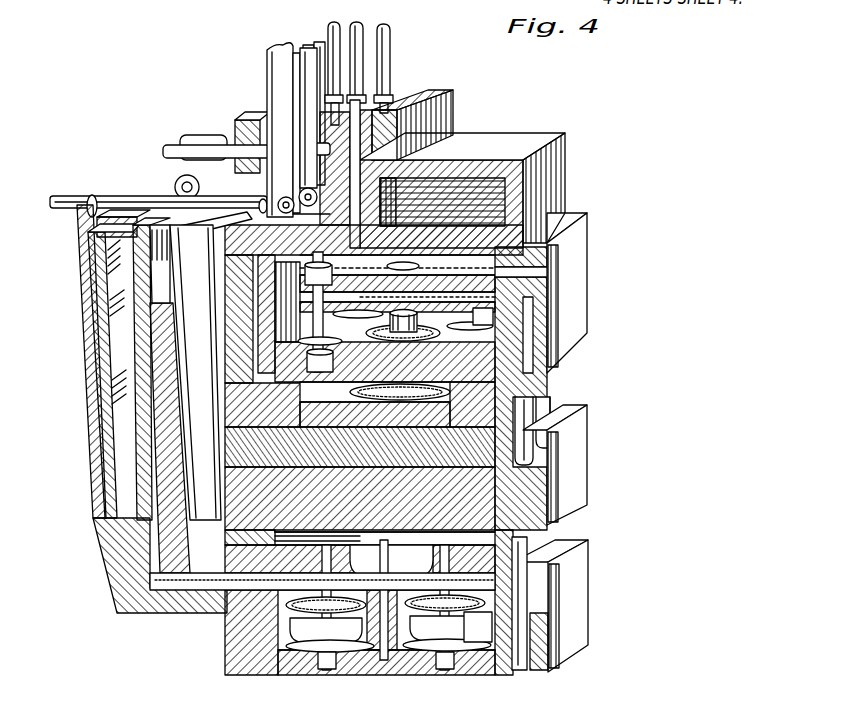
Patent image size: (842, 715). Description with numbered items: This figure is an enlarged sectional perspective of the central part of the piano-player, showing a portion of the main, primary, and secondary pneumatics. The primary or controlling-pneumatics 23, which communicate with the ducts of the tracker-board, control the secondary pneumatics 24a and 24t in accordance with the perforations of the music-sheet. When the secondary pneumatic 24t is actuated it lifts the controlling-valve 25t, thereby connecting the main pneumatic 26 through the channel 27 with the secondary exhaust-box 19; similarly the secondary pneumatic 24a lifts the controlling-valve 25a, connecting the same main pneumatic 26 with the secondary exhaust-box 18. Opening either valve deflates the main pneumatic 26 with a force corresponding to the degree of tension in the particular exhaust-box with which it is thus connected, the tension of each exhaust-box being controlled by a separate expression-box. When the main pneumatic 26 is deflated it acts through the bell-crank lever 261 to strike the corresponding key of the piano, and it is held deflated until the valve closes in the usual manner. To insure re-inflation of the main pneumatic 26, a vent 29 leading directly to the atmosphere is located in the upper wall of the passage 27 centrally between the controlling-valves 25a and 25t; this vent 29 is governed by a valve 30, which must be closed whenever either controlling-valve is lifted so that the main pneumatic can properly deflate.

The bell-crank lever 261 is at (280, 93).
The main pneumatic 26 is at (123, 348).
The primary or controlling-pneumatics 23 is at (337, 345).
The valve 30 is at (365, 572).
The vent 29 is at (460, 523).
The controlling-valve 25t is at (493, 588).
The channel 27 is at (213, 583).
The controlling-valve 25a is at (232, 647).
The secondary pneumatic 24a is at (303, 620).
The secondary pneumatic 24t is at (417, 640).
The secondary exhaust-box 19 is at (477, 627).
The secondary exhaust-box 18 is at (318, 662).